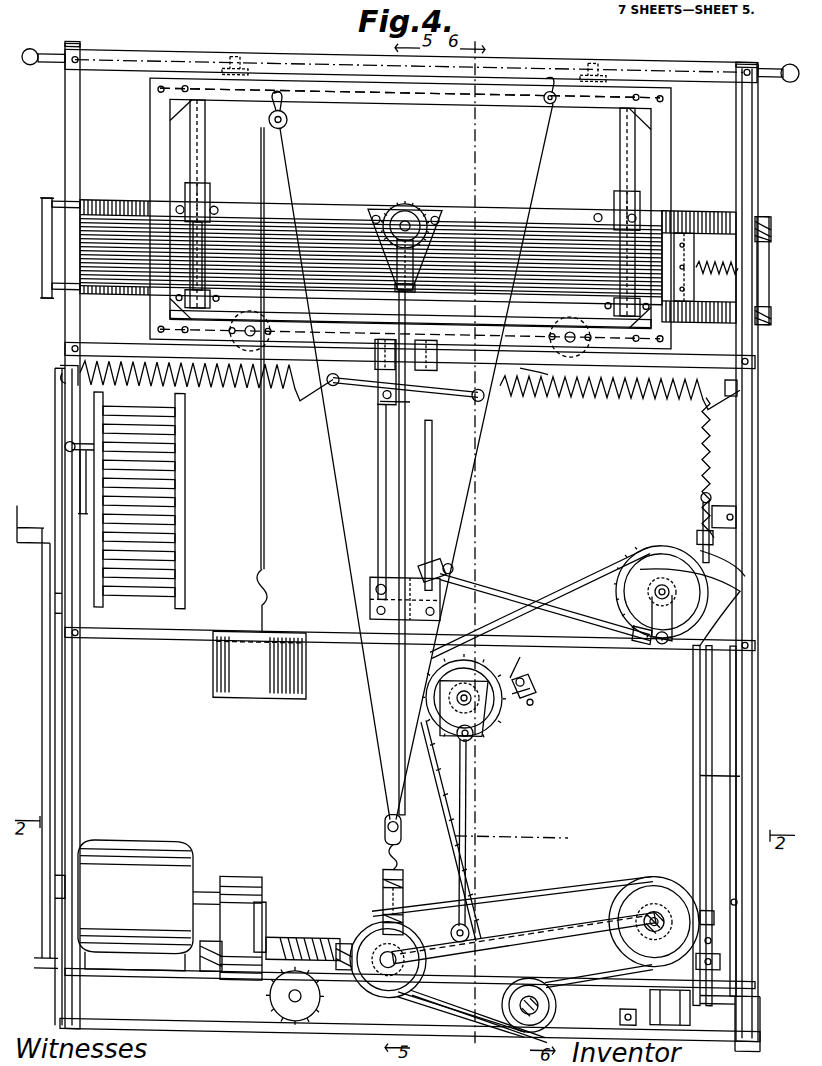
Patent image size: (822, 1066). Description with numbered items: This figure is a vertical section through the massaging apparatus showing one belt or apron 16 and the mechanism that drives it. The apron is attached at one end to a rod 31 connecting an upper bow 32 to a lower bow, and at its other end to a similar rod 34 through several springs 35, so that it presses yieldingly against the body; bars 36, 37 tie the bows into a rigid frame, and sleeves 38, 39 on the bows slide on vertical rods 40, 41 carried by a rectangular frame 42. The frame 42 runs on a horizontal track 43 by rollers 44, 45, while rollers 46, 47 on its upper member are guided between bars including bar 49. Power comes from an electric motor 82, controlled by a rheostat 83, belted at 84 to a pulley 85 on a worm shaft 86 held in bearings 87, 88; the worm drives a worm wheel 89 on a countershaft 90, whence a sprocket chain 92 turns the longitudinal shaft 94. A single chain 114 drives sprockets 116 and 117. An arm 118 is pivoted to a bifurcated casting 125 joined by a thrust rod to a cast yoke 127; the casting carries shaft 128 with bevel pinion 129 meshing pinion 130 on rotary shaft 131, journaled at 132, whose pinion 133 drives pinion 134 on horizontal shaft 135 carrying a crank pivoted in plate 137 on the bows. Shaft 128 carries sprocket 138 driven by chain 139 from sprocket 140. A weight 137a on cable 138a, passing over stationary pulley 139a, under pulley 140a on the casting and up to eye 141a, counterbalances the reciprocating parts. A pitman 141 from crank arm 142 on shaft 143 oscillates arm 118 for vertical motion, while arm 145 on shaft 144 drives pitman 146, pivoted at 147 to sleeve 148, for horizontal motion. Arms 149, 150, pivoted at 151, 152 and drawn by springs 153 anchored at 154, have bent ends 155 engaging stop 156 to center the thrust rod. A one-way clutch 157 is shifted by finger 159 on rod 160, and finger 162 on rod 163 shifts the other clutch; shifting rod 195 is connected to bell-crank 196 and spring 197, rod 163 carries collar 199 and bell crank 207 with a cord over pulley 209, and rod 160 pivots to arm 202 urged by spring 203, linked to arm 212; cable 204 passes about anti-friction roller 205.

The belt or apron 16 is at (320, 235).
The rod 31 is at (50, 206).
The upper bow 32 is at (120, 206).
The rod 34 is at (768, 212).
The springs 35 is at (710, 256).
The bar 36 is at (205, 238).
The bar 37 is at (660, 243).
The sleeve 38 is at (205, 190).
The sleeve 39 is at (210, 304).
The vertical rod 40 is at (205, 130).
The vertical rod 41 is at (620, 128).
The rectangular frame 42 is at (383, 104).
The horizontal track 43 is at (538, 372).
The roller 44 is at (240, 384).
The roller 45 is at (565, 372).
The roller 46 is at (233, 62).
The roller 47 is at (622, 64).
The parallel bar 49 is at (308, 58).
The electric motor 82 is at (124, 905).
The rheostat 83 is at (102, 433).
The belt connection 84 is at (260, 882).
The pulley 85 is at (267, 935).
The worm shaft 86 is at (288, 946).
The bearing 87 is at (210, 972).
The bearing 88 is at (340, 945).
The worm wheel 89 is at (270, 993).
The countershaft 90 is at (292, 1004).
The sprocket chain 92 is at (470, 1036).
The longitudinal shaft 94 is at (522, 1012).
The chain 114 is at (580, 576).
The sprocket 116 is at (666, 545).
The sprocket 117 is at (490, 742).
The arm 118 is at (518, 935).
The bifurcated casting 125 is at (404, 900).
The cast yoke 127 is at (396, 268).
The shaft 128 is at (385, 966).
The bevel pinion 129 is at (432, 1000).
The bevel pinion 130 is at (455, 924).
The rotary shaft 131 is at (399, 426).
The journal 132 is at (425, 268).
The bevel pinion 133 is at (392, 238).
The bevel pinion 134 is at (397, 214).
The horizontal shaft 135 is at (409, 220).
The plate 137 is at (418, 278).
The weight 137a is at (263, 702).
The sprocket 138 is at (392, 965).
The cable 138a is at (260, 478).
The chain 139 is at (516, 886).
The stationary pulley 139a is at (288, 122).
The sprocket 140 is at (650, 876).
The pulley 140a is at (386, 827).
The pitman 141 is at (468, 812).
The eye 141a is at (545, 100).
The crank arm 142 is at (474, 726).
The shaft 143 is at (478, 700).
The shaft 144 is at (646, 588).
The arm 145 is at (664, 640).
The pitman 146 is at (545, 597).
The pivot 147 is at (454, 566).
The sleeve 148 is at (430, 560).
The arm 149 is at (378, 442).
The arm 150 is at (416, 452).
The pivot 151 is at (372, 598).
The pivot 152 is at (448, 603).
The spring 153 is at (300, 390).
The spring attachment 154 is at (62, 380).
The bent upper end 155 is at (390, 344).
The intermediate stop 156 is at (420, 344).
The one-way clutch 157 is at (640, 910).
The finger 159 is at (737, 894).
The shifting rod 160 is at (720, 955).
The finger 162 is at (535, 699).
The shifting rod 163 is at (528, 680).
The shifting rod 195 is at (736, 516).
The bell-crank 196 is at (700, 498).
The spring 197 is at (704, 444).
The collar 199 is at (521, 668).
The arm 202 is at (714, 912).
The spring 203 is at (712, 935).
The cable 204 is at (694, 692).
The anti-friction roller 205 is at (682, 1020).
The bell crank 207 is at (533, 689).
The pulley 209 is at (622, 1018).
The arm 212 is at (745, 1010).